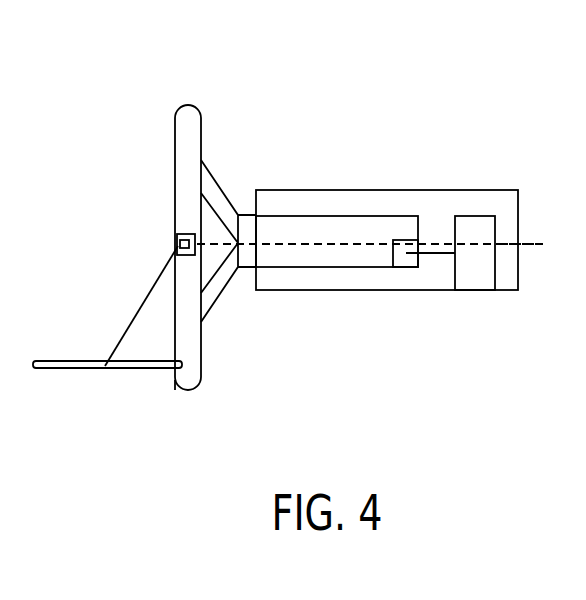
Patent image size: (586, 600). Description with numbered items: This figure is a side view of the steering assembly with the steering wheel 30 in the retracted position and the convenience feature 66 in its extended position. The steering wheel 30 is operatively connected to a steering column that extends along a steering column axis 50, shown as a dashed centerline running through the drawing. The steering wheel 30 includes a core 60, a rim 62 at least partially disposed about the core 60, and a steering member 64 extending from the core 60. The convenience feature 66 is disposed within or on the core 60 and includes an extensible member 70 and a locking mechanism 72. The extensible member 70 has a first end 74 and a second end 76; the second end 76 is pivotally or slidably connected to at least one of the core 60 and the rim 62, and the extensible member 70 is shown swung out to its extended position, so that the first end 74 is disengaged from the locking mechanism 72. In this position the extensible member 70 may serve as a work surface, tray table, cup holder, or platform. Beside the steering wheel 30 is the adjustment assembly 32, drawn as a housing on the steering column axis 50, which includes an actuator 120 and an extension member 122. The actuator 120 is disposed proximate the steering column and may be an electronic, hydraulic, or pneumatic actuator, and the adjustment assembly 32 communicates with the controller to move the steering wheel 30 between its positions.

The steering wheel 30 is at (158, 106).
The adjustment assembly 32 is at (439, 215).
The steering column axis 50 is at (543, 244).
The core 60 is at (208, 180).
The rim 62 is at (193, 120).
The steering member 64 is at (330, 267).
The convenience feature 66 is at (108, 300).
The extensible member 70 is at (101, 378).
The locking mechanism 72 is at (178, 244).
The first end 74 is at (33, 370).
The second end 76 is at (173, 373).
The actuator 120 is at (494, 275).
The extension member 122 is at (437, 253).